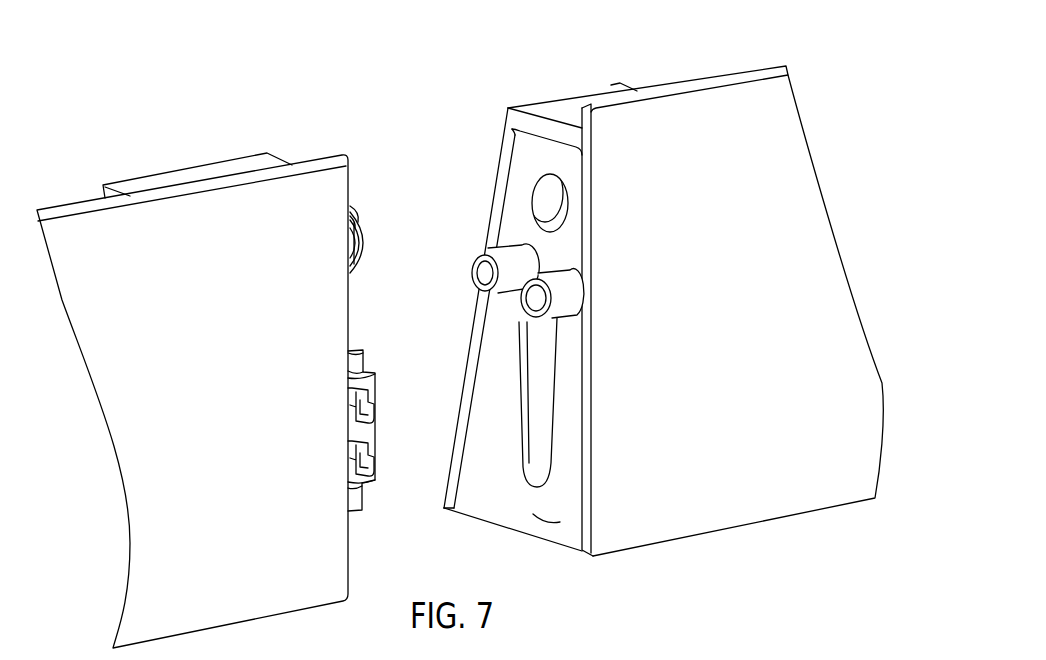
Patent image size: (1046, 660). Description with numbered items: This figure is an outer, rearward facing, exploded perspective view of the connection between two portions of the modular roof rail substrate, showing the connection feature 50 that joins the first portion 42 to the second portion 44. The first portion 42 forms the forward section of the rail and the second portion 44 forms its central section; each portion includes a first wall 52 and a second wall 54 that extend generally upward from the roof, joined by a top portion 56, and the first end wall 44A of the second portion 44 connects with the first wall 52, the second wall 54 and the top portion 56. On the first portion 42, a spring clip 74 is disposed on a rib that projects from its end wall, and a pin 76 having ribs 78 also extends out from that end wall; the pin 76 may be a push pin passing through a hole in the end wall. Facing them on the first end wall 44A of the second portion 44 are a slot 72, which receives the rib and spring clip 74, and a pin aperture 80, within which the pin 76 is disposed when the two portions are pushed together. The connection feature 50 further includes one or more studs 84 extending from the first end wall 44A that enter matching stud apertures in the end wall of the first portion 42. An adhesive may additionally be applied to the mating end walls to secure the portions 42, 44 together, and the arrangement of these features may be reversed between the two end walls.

The first portion 42 is at (142, 152).
The second portion 44 is at (648, 76).
The first end wall 44A is at (544, 517).
The connection feature 50 is at (418, 108).
The first wall 52 is at (587, 513).
The second wall 54 is at (443, 492).
The top portion 56 is at (543, 125).
The slot 72 is at (541, 463).
The spring clip 74 is at (366, 421).
The pin 76 is at (363, 242).
The ribs 78 is at (357, 210).
The pin aperture 80 is at (534, 186).
The studs 84 is at (542, 330).